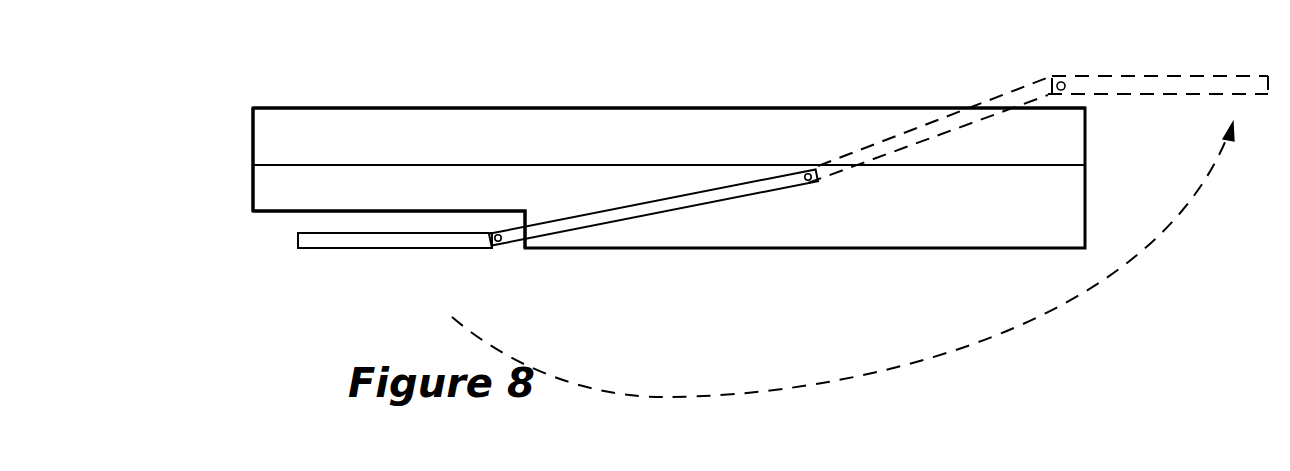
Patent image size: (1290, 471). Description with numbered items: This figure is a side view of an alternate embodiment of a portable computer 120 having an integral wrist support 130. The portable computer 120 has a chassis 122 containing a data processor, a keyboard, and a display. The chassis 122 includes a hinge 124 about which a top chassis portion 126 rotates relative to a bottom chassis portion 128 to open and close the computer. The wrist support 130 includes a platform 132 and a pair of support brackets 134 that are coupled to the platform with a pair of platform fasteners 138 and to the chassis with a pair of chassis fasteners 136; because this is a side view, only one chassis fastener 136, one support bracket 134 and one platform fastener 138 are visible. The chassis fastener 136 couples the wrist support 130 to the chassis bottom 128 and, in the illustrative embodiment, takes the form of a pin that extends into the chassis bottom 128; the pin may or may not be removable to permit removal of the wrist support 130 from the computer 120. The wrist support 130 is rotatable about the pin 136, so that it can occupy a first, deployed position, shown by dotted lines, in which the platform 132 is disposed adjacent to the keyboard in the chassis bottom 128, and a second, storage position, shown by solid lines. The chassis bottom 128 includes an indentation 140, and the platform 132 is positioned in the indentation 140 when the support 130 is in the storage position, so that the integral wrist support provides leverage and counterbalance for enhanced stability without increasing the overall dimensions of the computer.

The portable computer 120 is at (642, 98).
The chassis 122 is at (422, 108).
The hinge 124 is at (252, 165).
The upper housing portion 126 is at (251, 124).
The bottom chassis portion 128 is at (251, 195).
The wrist support 130 is at (1143, 65).
The platform 132 is at (365, 250).
The support bracket 134 is at (587, 211).
The chassis fastener 136 is at (808, 183).
The platform fastener 138 is at (500, 245).
The indentation 140 is at (292, 225).